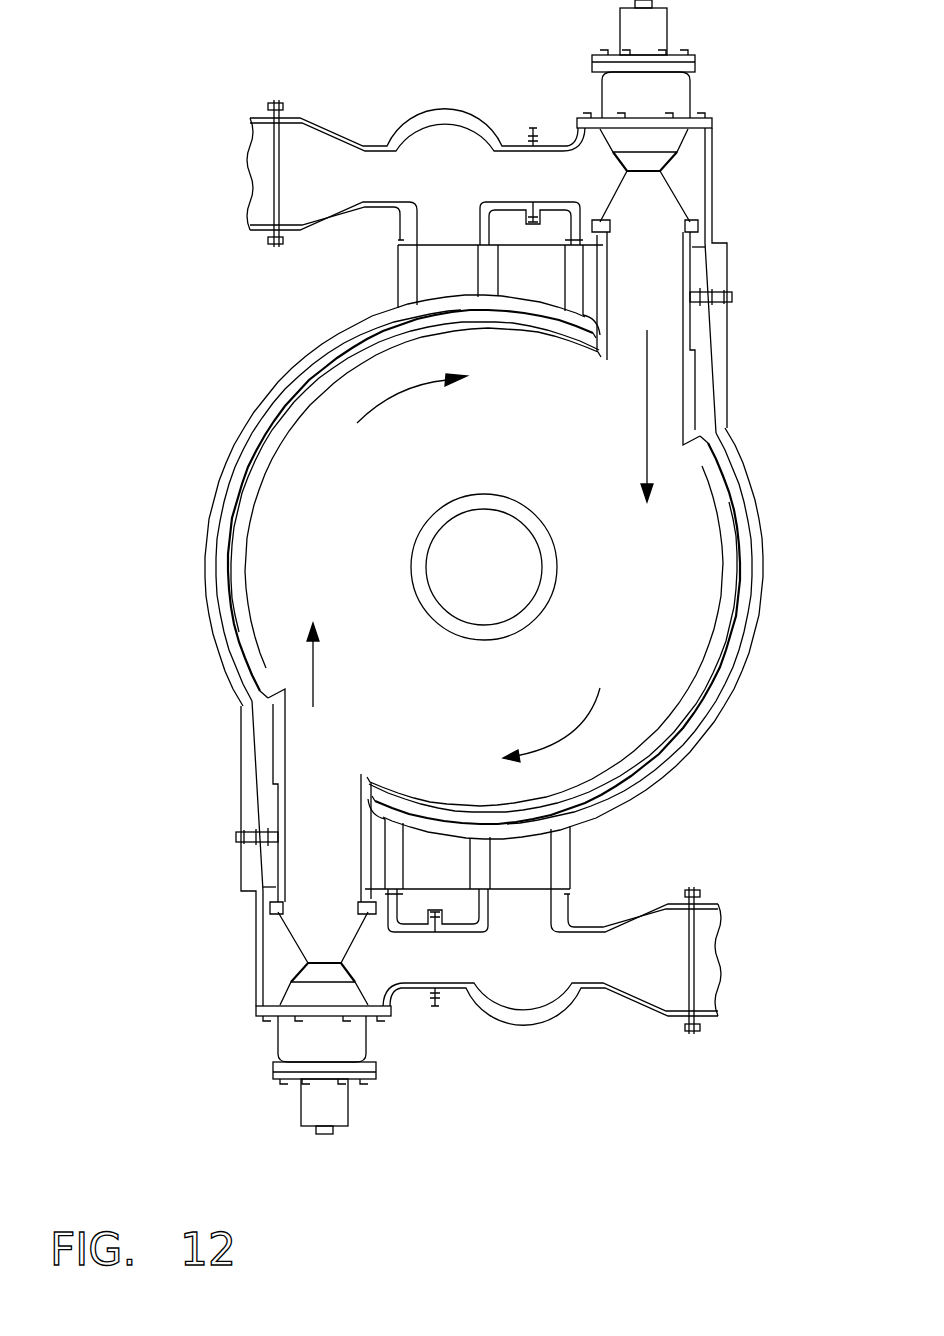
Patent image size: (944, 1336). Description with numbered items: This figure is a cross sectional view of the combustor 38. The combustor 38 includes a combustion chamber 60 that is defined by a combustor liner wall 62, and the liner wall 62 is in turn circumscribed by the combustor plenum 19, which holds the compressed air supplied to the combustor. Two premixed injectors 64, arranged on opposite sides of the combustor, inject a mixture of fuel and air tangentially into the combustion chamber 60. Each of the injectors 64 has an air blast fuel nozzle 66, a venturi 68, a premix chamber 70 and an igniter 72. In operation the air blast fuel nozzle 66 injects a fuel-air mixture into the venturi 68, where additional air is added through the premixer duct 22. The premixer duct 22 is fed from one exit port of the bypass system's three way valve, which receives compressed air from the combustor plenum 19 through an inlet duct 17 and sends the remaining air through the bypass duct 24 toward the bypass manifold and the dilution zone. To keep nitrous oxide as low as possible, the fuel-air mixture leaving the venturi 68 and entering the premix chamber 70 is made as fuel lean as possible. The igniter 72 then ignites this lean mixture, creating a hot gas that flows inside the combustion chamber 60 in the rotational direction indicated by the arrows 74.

The inlet duct 17 is at (440, 272).
The combustor plenum 19 is at (338, 333).
The premixer duct 22 is at (540, 187).
The bypass duct 24 is at (262, 160).
The combustor 38 is at (766, 396).
The combustion chamber 60 is at (347, 489).
The combustor liner wall 62 is at (720, 630).
The premixed injector 64 is at (716, 221).
The air blast fuel nozzle 66 is at (680, 98).
The venturi 68 is at (659, 212).
The premix chamber 70 is at (651, 311).
The igniter 72 is at (727, 294).
The arrows 74 is at (402, 393).